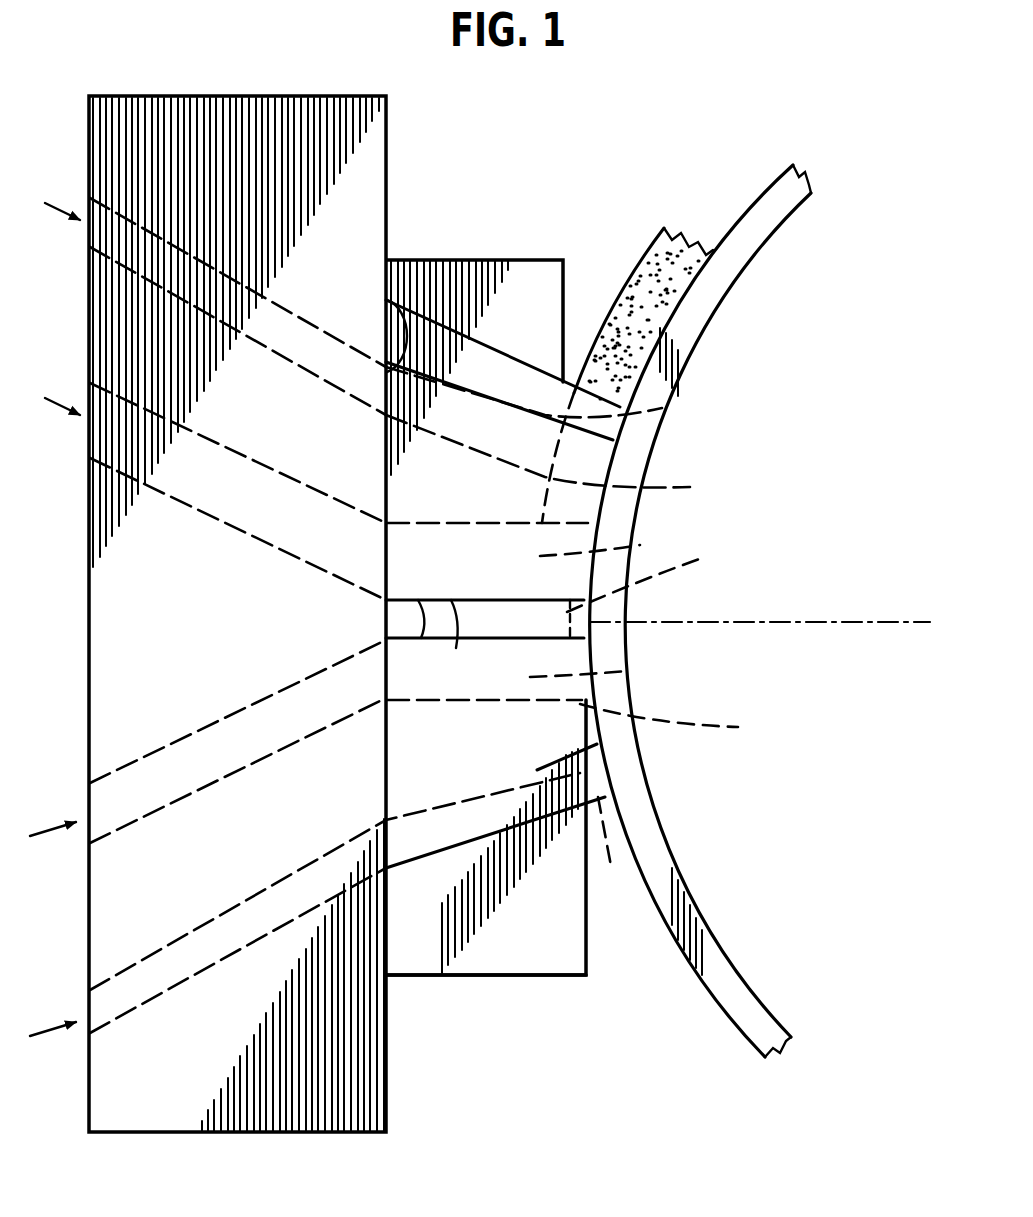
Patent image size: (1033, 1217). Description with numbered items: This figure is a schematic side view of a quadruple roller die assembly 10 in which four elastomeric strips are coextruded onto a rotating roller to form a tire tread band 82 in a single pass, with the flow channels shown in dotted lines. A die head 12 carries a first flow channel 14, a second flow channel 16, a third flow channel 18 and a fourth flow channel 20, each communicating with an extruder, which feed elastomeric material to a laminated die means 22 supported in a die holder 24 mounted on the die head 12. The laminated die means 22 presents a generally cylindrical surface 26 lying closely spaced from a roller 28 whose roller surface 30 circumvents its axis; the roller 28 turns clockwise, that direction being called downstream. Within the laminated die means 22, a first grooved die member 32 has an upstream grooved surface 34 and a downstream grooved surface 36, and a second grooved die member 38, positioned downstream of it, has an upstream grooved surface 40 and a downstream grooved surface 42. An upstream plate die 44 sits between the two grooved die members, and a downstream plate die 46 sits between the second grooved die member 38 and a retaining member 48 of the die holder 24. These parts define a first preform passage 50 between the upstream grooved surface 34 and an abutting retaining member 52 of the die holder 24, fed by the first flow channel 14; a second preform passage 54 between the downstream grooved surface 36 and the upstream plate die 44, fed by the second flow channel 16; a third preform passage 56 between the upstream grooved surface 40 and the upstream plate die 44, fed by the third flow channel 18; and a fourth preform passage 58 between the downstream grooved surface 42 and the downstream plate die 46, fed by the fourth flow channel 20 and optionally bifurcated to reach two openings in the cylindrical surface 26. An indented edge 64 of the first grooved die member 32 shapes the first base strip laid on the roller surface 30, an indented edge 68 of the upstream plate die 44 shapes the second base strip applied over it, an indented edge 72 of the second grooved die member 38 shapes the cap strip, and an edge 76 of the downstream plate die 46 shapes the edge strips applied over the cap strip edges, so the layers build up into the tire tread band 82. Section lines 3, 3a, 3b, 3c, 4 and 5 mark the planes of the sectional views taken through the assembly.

The fiber optic coupling assembly 10 is at (548, 143).
The die head 12 is at (226, 90).
The first flow channel 14 is at (176, 996).
The second flow channel 16 is at (182, 809).
The third flow channel 18 is at (187, 505).
The fourth flow channel 20 is at (164, 291).
The laminated die means 22 is at (477, 848).
The die holder 24 is at (418, 254).
The cylindrical surface 26 is at (600, 747).
The roller 28 is at (700, 985).
The roller surface 30 is at (744, 213).
The first grooved die member 32 is at (404, 768).
The upstream grooved surface 34 is at (535, 826).
The downstream grooved surface 36 is at (420, 600).
The second grooved die member 38 is at (383, 484).
The upstream grooved surface 40 is at (456, 641).
The downstream grooved surface 42 is at (387, 300).
The upstream plate die 44 is at (383, 613).
The downstream plate die 46 is at (482, 358).
The retaining member 48 is at (512, 258).
The first preform passage 50 is at (611, 848).
The retaining member 52 is at (541, 963).
The second preform passage 54 is at (622, 674).
The third preform passage 56 is at (628, 550).
The fourth preform passage 58 is at (520, 356).
The edge 64 is at (738, 728).
The edge 68 is at (706, 557).
The edge 72 is at (708, 481).
The edge 76 is at (672, 406).
The tire tread band 82 is at (652, 230).
The section line 3 is at (627, 267).
The section line 3a is at (567, 738).
The section line 3b is at (552, 625).
The section line 3c is at (553, 487).
The section line 4 is at (382, 638).
The section line 5 is at (382, 368).